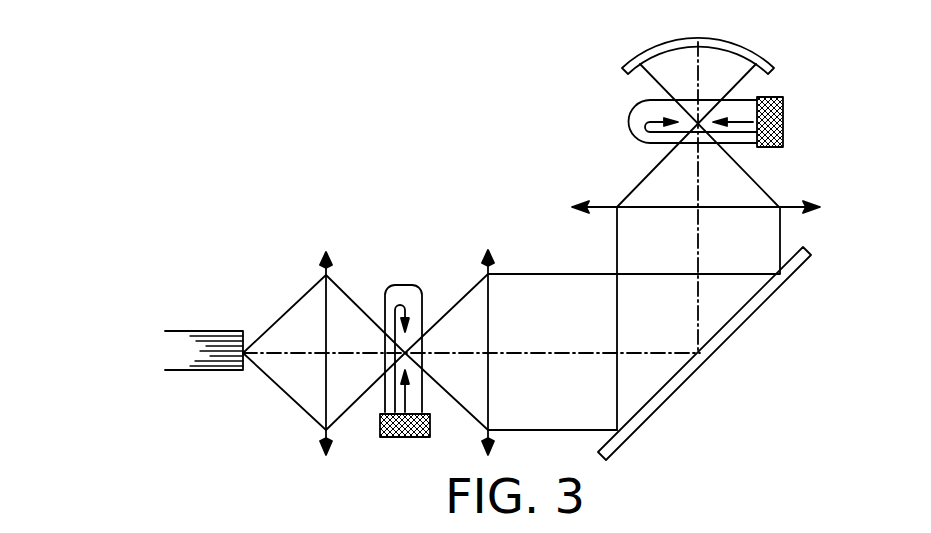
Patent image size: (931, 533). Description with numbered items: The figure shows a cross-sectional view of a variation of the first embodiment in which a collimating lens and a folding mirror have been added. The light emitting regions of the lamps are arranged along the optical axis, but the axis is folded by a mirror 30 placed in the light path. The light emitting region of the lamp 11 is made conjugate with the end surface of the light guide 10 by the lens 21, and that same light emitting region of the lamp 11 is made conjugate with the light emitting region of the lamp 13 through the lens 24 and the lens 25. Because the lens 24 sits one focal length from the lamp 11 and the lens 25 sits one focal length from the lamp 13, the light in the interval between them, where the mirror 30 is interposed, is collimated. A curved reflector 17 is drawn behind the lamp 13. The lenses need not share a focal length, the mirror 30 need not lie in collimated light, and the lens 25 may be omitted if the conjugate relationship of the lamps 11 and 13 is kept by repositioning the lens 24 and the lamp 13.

The light guide 10 is at (182, 342).
The lens 21 is at (324, 258).
The lamp 11 is at (400, 290).
The lens 24 is at (486, 258).
The lens 25 is at (798, 207).
The concave reflector 17 is at (656, 52).
The lamp 13 is at (628, 125).
The mirror 30 is at (675, 383).